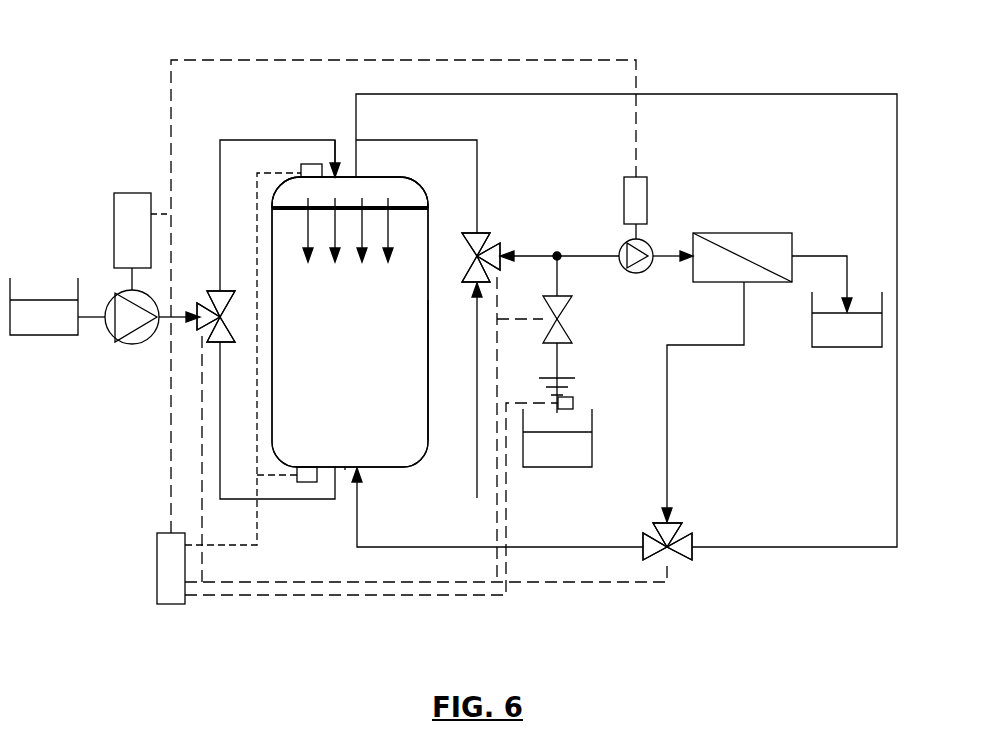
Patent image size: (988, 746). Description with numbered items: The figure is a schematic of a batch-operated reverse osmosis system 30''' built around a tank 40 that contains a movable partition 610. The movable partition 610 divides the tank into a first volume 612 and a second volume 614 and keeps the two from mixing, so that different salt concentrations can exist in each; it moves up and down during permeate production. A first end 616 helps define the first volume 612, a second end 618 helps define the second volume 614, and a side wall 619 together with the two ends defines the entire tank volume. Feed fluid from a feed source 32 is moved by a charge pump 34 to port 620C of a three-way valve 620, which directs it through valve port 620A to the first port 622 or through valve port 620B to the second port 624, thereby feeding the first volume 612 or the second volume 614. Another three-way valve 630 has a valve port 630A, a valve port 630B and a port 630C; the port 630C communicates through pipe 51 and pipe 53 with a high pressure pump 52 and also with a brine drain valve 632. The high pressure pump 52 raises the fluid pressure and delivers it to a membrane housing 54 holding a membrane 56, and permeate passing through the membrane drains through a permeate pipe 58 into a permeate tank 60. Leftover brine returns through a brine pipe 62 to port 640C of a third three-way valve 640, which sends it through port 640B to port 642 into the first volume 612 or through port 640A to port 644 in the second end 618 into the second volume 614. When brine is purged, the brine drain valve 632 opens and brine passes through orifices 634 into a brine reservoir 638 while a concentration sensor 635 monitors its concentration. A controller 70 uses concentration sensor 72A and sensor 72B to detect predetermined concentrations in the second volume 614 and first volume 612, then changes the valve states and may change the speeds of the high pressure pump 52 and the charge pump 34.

The reverse osmosis system 30''' is at (81, 56).
The feed source 32 is at (48, 335).
The charge pump 34 is at (108, 333).
The tank 40 is at (392, 467).
The pipe 51 is at (572, 253).
The high pressure pump 52 is at (633, 232).
The pipe 53 is at (666, 253).
The membrane housing 54 is at (774, 233).
The membrane 56 is at (722, 245).
The permeate pipe 58 is at (827, 253).
The permeate tank 60 is at (837, 348).
The brine pipe 62 is at (720, 347).
The controller 70 is at (157, 604).
The concentration sensor 72A is at (305, 483).
The sensor 72B is at (312, 164).
The movable partition 610 is at (286, 207).
The first volume 612 is at (410, 194).
The second volume 614 is at (277, 410).
The first end 616 is at (348, 177).
The second end 618 is at (345, 468).
The side wall 619 is at (428, 362).
The three-way valve 620 is at (222, 315).
The valve port 620A is at (220, 295).
The valve port 620B is at (213, 338).
The valve port 620C is at (202, 320).
The first port 622 is at (318, 140).
The second port 624 is at (333, 470).
The three-way valve 630 is at (477, 256).
The valve port 630A is at (480, 248).
The valve port 630B is at (470, 270).
The port 630C is at (496, 251).
The brine drain valve 632 is at (566, 316).
The orifices 634 is at (566, 380).
The concentration sensor 635 is at (574, 403).
The brine reservoir 638 is at (557, 467).
The three-way valve 640 is at (672, 552).
The port 640A is at (645, 553).
The port 640B is at (694, 540).
The port 640C is at (670, 522).
The port 642 is at (357, 153).
The port 644 is at (358, 522).